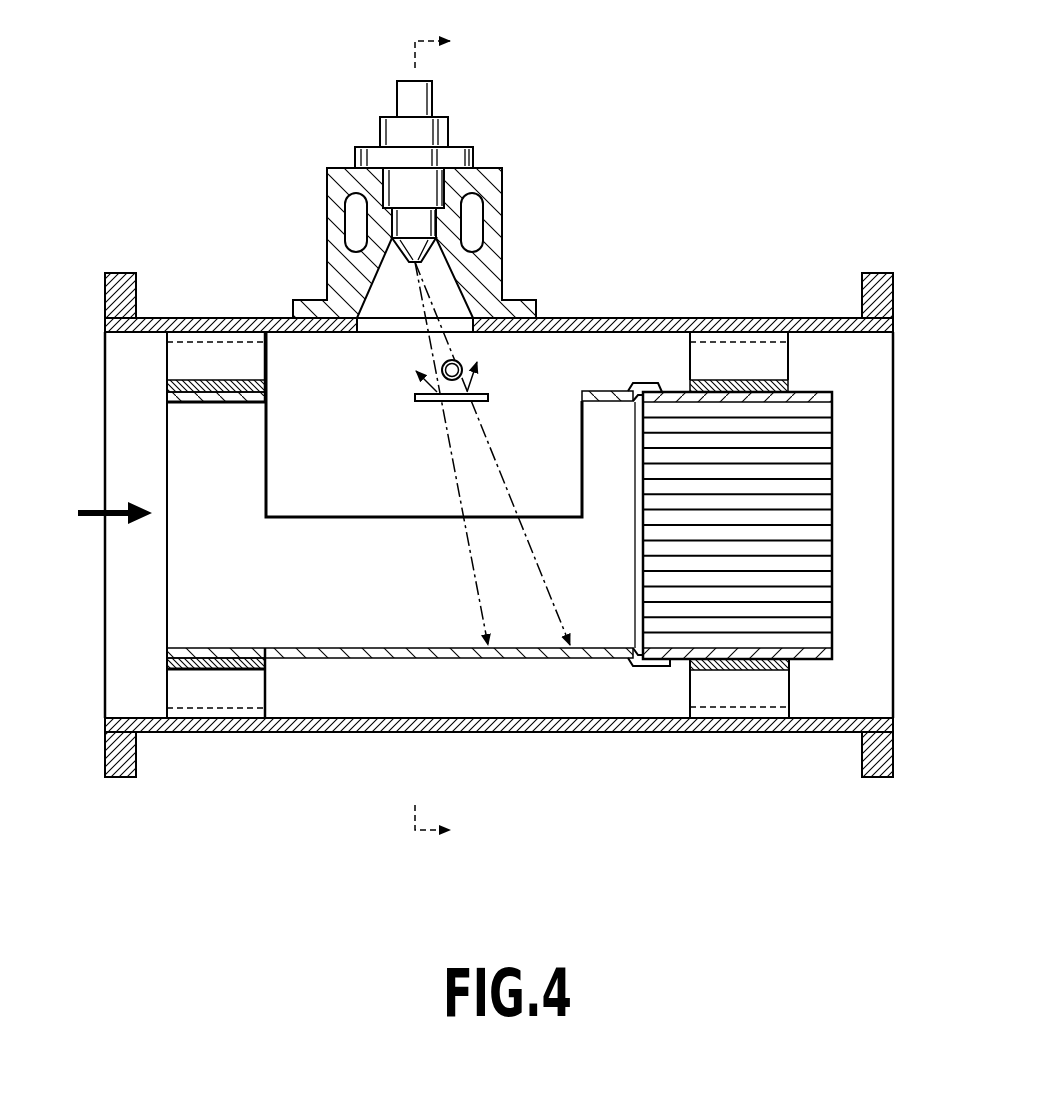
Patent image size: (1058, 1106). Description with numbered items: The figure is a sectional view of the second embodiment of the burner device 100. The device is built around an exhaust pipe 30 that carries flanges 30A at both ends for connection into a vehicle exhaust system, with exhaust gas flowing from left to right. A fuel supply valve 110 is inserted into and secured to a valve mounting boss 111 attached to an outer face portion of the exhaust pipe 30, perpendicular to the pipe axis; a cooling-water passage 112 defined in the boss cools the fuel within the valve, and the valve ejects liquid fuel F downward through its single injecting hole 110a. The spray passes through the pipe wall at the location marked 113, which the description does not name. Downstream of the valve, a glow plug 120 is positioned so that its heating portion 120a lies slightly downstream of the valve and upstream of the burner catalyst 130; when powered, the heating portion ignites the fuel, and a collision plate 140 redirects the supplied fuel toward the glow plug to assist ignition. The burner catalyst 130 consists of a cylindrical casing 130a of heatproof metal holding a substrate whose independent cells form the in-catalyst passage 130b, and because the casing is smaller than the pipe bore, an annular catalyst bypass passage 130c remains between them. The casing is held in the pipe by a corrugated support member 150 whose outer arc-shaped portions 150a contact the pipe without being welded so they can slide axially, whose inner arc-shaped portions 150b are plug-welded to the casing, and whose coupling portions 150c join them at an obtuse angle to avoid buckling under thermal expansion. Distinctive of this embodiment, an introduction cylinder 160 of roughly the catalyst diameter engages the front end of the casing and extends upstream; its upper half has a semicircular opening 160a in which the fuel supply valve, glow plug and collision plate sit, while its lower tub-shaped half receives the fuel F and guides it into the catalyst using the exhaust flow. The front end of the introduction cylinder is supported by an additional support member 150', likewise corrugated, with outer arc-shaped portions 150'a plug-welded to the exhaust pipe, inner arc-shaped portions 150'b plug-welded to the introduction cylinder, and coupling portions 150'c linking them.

The burner device 100 is at (486, 437).
The exhaust pipe 30 is at (612, 317).
The flanges 30A is at (875, 277).
The fuel supply valve 110 is at (432, 137).
The injecting hole 110a is at (413, 265).
The valve mounting boss 111 is at (502, 183).
The cooling-water passage 112 is at (477, 230).
The opening 113 is at (365, 330).
The glow plug 120 is at (463, 363).
The heating portion 120a is at (433, 365).
The burner catalyst 130 is at (719, 499).
The cylindrical casing 130a is at (807, 395).
The in-catalyst passage 130b is at (653, 522).
The catalyst bypass passage 130c is at (675, 357).
The collision plate 140 is at (423, 403).
The support member 150 is at (685, 550).
The outer arc-shaped portions 150a is at (743, 712).
The inner arc-shaped portions 150b is at (723, 382).
The coupling portions 150c is at (770, 355).
The additional support member 150' is at (234, 756).
The outer arc-shaped portions 150'a is at (216, 334).
The inner arc-shaped portions 150'b is at (211, 720).
The coupling portions 150'c is at (221, 658).
The introduction cylinder 160 is at (215, 403).
The opening 160a is at (563, 435).
The liquid fuel F is at (455, 473).